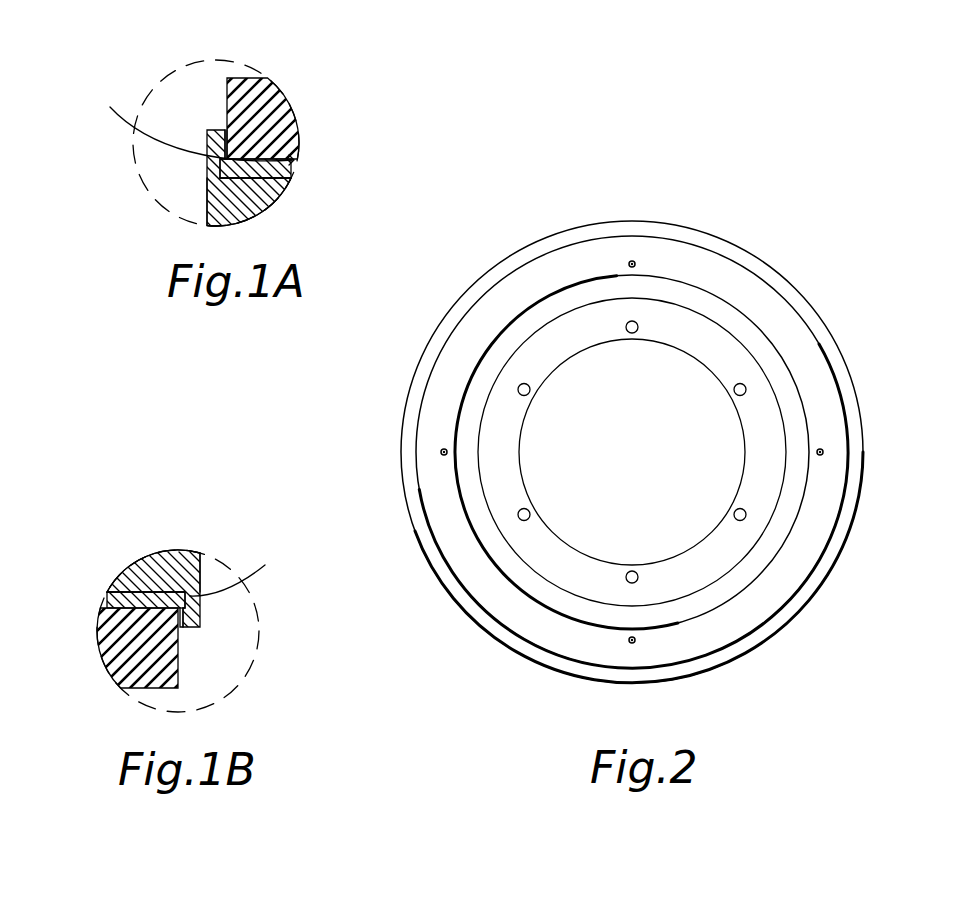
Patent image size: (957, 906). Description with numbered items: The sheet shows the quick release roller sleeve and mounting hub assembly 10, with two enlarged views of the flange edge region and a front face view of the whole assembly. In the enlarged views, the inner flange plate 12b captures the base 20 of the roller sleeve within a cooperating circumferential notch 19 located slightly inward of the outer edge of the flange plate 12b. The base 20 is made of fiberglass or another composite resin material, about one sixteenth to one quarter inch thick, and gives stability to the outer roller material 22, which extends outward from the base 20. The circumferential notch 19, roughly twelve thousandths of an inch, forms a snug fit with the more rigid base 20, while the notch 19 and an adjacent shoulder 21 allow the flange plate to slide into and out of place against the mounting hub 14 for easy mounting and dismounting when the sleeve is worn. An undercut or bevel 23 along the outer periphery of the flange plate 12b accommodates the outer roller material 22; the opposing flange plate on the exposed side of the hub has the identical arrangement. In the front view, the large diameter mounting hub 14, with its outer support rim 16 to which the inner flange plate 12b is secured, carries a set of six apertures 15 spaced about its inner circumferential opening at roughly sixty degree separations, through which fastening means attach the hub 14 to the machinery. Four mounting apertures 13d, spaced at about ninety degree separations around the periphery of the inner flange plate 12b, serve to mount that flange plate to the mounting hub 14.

In FIG. 2, the quick release roller sleeve and mounting hub assembly 10 is at (688, 187).
In FIG. 1A, the inner flange plate 12b is at (213, 200).
In FIG. 1B, the inner flange plate 12b is at (183, 557).
In FIG. 2, the inner flange plate 12b is at (777, 313).
In FIG. 2, the mounting apertures 13d is at (632, 261).
In FIG. 2, the mounting hub 14 is at (508, 530).
In FIG. 2, the apertures 15 is at (627, 332).
In FIG. 2, the outer support rim 16 is at (523, 582).
In FIG. 1A, the circumferential notch 19 is at (188, 125).
In FIG. 1B, the circumferential notch 19 is at (241, 568).
In FIG. 1A, the base 20 is at (280, 158).
In FIG. 1B, the base 20 is at (108, 630).
In FIG. 1A, the shoulder 21 is at (263, 197).
In FIG. 1B, the shoulder 21 is at (145, 570).
In FIG. 1A, the outer roller material 22 is at (253, 90).
In FIG. 1B, the outer roller material 22 is at (125, 675).
In FIG. 2, the outer roller material 22 is at (744, 262).
In FIG. 1A, the undercut or bevel 23 is at (237, 143).
In FIG. 1B, the undercut or bevel 23 is at (180, 650).